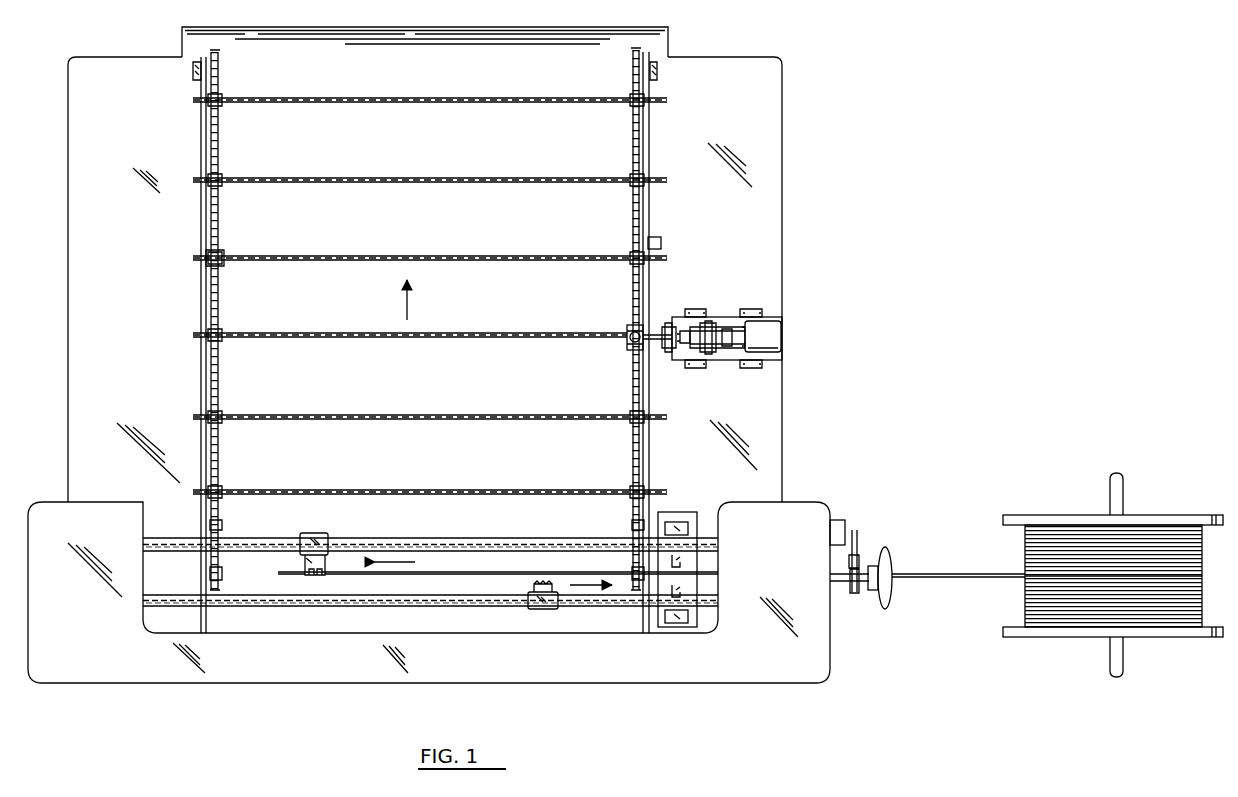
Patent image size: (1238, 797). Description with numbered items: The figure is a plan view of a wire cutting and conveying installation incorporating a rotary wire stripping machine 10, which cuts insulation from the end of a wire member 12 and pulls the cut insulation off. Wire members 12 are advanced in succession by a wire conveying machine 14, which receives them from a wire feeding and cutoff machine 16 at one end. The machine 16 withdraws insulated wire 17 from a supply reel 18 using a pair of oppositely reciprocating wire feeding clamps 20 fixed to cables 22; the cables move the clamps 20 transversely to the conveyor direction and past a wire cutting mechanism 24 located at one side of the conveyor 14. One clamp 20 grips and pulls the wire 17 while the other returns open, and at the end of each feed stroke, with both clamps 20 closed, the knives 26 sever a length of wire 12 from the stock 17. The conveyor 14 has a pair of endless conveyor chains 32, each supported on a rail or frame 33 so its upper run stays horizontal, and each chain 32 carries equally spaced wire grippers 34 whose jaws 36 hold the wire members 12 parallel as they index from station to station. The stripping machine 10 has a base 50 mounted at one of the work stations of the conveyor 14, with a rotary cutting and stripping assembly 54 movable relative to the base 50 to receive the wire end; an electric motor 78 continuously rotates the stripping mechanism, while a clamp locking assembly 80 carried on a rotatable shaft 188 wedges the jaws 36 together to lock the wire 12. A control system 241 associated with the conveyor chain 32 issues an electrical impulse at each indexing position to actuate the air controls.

The rotary wire stripping machine 10 is at (705, 331).
The wire member 12 is at (398, 104).
The wire conveying machine 14 is at (690, 48).
The wire feeding and cutoff machine 16 is at (833, 682).
The insulated wire 17 is at (282, 573).
The reel 18 is at (1016, 518).
The wire feeding clamps 20 is at (318, 512).
The cables 22 is at (348, 540).
The wire cutting mechanism 24 is at (697, 628).
The knives 26 is at (680, 589).
The endless conveyor chains 32 is at (219, 312).
The rail or frame 33 is at (200, 216).
The wire grippers 34 is at (221, 177).
The jaws 36 is at (221, 256).
The base 50 is at (770, 362).
The rotary cutting and stripping assembly 54 is at (677, 359).
The electric motor 78 is at (774, 338).
The clamp locking assembly 80 is at (623, 345).
The shaft 188 is at (655, 330).
The control system 241 is at (662, 241).